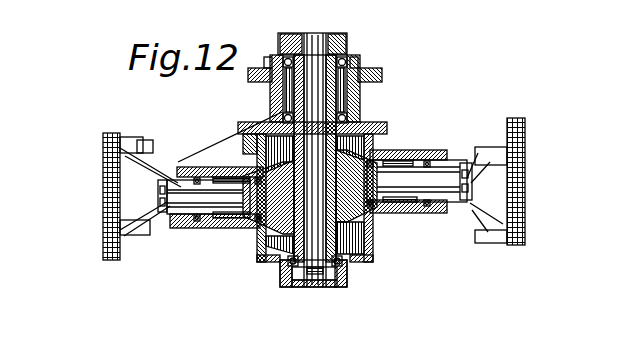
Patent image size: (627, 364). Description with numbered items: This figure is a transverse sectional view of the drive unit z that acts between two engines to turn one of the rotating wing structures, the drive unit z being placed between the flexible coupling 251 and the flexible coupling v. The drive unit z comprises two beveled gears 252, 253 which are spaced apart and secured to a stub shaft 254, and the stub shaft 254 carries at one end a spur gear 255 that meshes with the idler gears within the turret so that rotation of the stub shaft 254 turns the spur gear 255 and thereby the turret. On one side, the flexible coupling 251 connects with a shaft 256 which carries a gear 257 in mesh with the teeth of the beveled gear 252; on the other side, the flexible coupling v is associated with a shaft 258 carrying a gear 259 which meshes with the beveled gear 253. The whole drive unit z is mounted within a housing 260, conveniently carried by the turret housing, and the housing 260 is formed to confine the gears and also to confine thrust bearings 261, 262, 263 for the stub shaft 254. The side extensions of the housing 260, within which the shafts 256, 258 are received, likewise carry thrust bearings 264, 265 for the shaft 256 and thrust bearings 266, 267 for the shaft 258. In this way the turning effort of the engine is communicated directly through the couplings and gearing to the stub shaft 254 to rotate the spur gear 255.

The flexible coupling 251 is at (108, 258).
The beveled gear 252 is at (372, 256).
The beveled gear 253 is at (352, 134).
The stub shaft 254 is at (265, 132).
The spur gear 255 is at (350, 44).
The shaft 256 is at (236, 205).
The gear 257 is at (262, 232).
The shaft 258 is at (386, 158).
The gear 259 is at (393, 180).
The housing 260 is at (400, 222).
The thrust bearing 261 is at (365, 68).
The thrust bearing 262 is at (352, 112).
The thrust bearing 263 is at (352, 276).
The thrust bearing 264 is at (258, 165).
The thrust bearing 265 is at (198, 168).
The thrust bearing 266 is at (430, 225).
The thrust bearing 267 is at (440, 215).
The flexible coupling v is at (526, 131).
The drive unit z is at (340, 284).